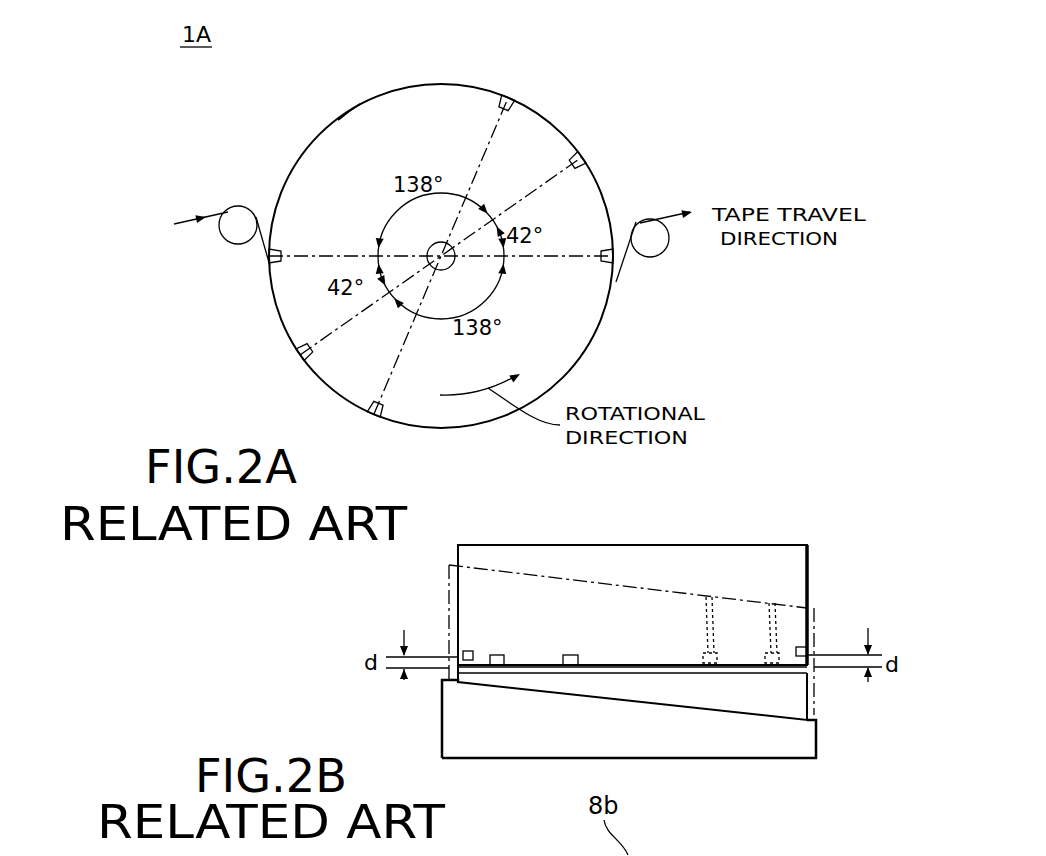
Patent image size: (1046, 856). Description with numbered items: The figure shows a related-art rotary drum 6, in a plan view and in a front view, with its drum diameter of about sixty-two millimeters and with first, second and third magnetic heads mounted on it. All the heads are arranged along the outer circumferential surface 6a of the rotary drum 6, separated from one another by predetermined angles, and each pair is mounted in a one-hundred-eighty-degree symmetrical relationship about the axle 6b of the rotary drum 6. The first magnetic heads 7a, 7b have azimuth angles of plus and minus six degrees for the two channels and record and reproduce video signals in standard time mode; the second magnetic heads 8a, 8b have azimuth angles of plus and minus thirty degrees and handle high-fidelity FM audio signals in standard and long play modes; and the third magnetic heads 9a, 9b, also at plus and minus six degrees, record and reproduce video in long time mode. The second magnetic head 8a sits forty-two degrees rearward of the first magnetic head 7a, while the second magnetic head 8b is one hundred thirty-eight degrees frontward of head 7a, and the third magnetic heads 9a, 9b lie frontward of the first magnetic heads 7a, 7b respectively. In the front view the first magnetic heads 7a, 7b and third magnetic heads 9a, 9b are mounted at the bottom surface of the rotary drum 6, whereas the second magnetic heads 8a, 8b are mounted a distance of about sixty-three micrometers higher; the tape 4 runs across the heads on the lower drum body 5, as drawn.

In FIG. 2A, the magnetic tape 4 is at (232, 207).
In FIG. 2B, the magnetic tape 4 is at (816, 697).
In FIG. 2B, the lower drum base 5 is at (816, 737).
In FIG. 2A, the rotary drum 6 is at (394, 78).
In FIG. 2B, the rotary drum 6 is at (820, 570).
In FIG. 2A, the outer circumferential surface 6a is at (338, 120).
In FIG. 2B, the outer circumferential surface 6a is at (808, 553).
In FIG. 2A, the axle 6b is at (447, 265).
In FIG. 2B, the axle 6b is at (530, 675).
In FIG. 2A, the 1ch first magnetic head 7a is at (588, 158).
In FIG. 2B, the 1ch first magnetic head 7a is at (773, 615).
In FIG. 2A, the 2ch first magnetic head 7b is at (303, 360).
In FIG. 2B, the 2ch first magnetic head 7b is at (498, 655).
In FIG. 2A, the 1ch second magnetic head 8a is at (614, 258).
In FIG. 2B, the 1ch second magnetic head 8a is at (807, 647).
In FIG. 2A, the 2ch second magnetic head 8b is at (268, 258).
In FIG. 2B, the 2ch second magnetic head 8b is at (468, 650).
In FIG. 2A, the 1ch third magnetic head 9a is at (512, 100).
In FIG. 2B, the 1ch third magnetic head 9a is at (711, 615).
In FIG. 2A, the 2ch third magnetic head 9b is at (378, 414).
In FIG. 2B, the 2ch third magnetic head 9b is at (571, 655).